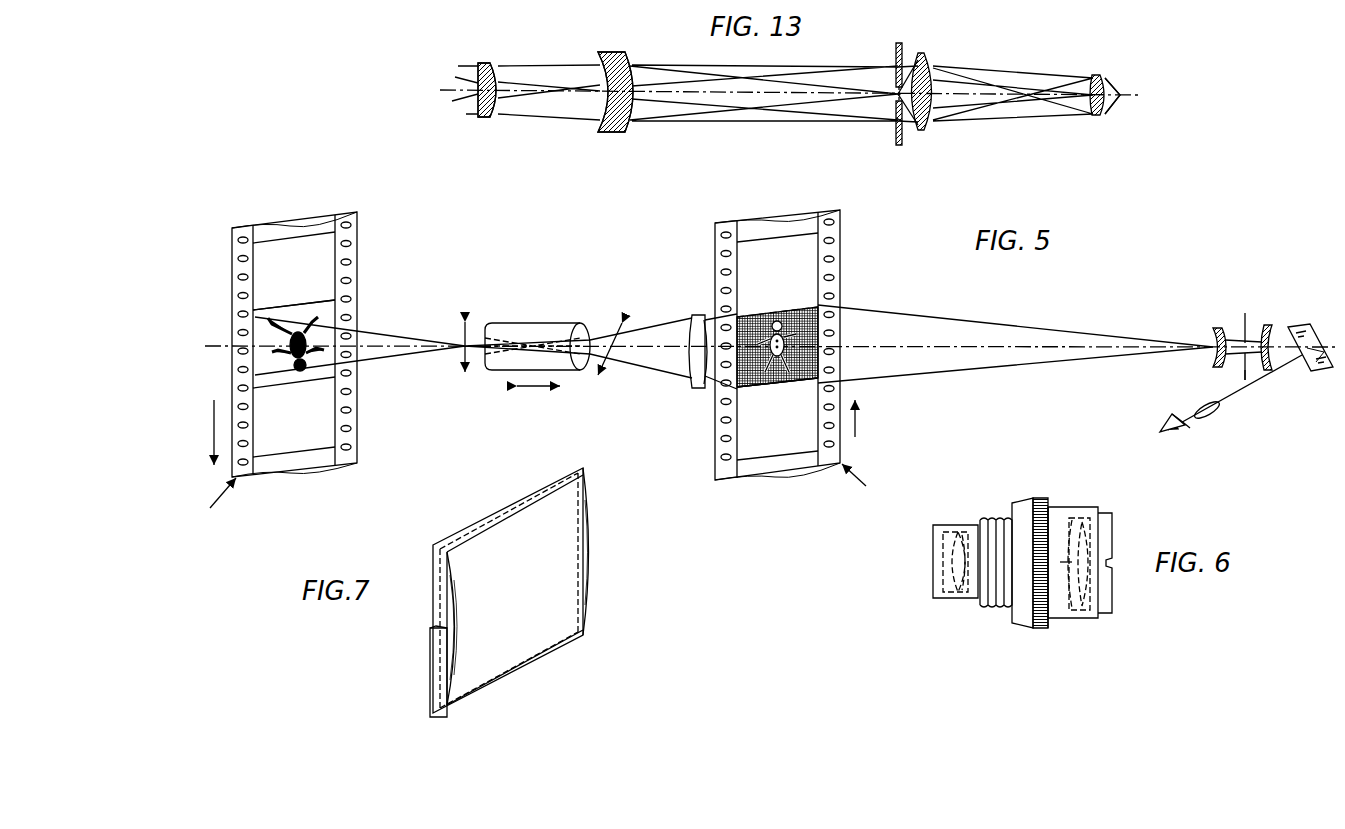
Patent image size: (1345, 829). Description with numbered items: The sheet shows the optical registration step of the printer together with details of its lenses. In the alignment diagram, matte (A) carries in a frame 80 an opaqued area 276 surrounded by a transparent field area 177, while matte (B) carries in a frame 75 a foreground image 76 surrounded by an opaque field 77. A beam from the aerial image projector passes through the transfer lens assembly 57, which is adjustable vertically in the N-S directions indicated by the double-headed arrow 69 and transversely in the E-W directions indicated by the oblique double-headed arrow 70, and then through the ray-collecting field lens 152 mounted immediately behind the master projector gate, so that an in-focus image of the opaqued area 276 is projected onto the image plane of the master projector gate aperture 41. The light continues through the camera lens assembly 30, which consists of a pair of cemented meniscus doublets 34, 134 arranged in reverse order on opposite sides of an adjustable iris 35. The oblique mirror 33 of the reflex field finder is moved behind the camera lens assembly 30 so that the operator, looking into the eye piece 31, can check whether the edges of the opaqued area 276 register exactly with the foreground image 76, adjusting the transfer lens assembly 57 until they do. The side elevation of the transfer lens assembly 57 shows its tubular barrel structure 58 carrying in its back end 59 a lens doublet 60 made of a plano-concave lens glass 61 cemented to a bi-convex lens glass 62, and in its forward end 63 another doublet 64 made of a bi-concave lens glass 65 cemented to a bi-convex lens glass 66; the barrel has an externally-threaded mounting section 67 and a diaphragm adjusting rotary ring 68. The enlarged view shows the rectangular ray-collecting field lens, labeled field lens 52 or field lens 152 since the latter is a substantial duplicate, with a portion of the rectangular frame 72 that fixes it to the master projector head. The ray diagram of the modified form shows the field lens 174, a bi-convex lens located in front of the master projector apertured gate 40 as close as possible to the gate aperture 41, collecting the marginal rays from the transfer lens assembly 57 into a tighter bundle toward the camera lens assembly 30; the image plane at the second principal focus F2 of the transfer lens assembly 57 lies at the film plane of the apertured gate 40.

In FIG. 13, the transfer lens assembly 57 is at (628, 54).
In FIG. 5, the transfer lens assembly 57 is at (536, 323).
In FIG. 6, the transfer lens assembly 57 is at (1022, 495).
In FIG. 13, the lens doublet 60 is at (486, 118).
In FIG. 6, the lens doublet 60 is at (938, 528).
In FIG. 13, the doublet 64 is at (604, 133).
In FIG. 6, the doublet 64 is at (1074, 612).
In FIG. 13, the master projector apertured gate 40 is at (899, 43).
In FIG. 13, the master projector gate aperture 41 is at (890, 118).
In FIG. 13, the second principal focus F2 is at (902, 100).
In FIG. 13, the field lens 174 is at (926, 55).
In FIG. 13, the cemented meniscus doublet 34 is at (1098, 75).
In FIG. 5, the cemented meniscus doublet 34 is at (1218, 333).
In FIG. 13, the camera lens assembly 30 is at (1100, 123).
In FIG. 5, the camera lens assembly 30 is at (1236, 322).
In FIG. 5, the transparent field area 177 is at (268, 372).
In FIG. 5, the opaqued area 276 is at (272, 326).
In FIG. 5, the frame 80 is at (322, 303).
In FIG. 5, the double-headed arrow 69 is at (462, 340).
In FIG. 5, the oblique double-headed arrow 70 is at (612, 353).
In FIG. 5, the ray-collecting field lens 152 is at (698, 313).
In FIG. 5, the frame 75 is at (810, 304).
In FIG. 5, the foreground image 76 is at (812, 330).
In FIG. 5, the opaque field 77 is at (815, 372).
In FIG. 5, the adjustable iris 35 is at (1243, 378).
In FIG. 5, the cemented meniscus doublet 134 is at (1268, 330).
In FIG. 5, the oblique mirror 33 is at (1312, 374).
In FIG. 5, the eye piece 31 is at (1210, 420).
In FIG. 7, the field lens 52 is at (592, 569).
In FIG. 7, the rectangular frame 72 is at (432, 655).
In FIG. 6, the plano-concave lens glass 61 is at (945, 598).
In FIG. 6, the back end 59 is at (958, 530).
In FIG. 6, the bi-convex lens glass 62 is at (962, 598).
In FIG. 6, the externally-threaded mounting section 67 is at (990, 515).
In FIG. 6, the diaphragm adjusting rotary ring 68 is at (1043, 498).
In FIG. 6, the forward end 63 is at (1092, 507).
In FIG. 6, the tubular barrel structure 58 is at (1093, 618).
In FIG. 6, the bi-concave lens glass 65 is at (1079, 515).
In FIG. 6, the bi-convex lens glass 66 is at (1088, 532).